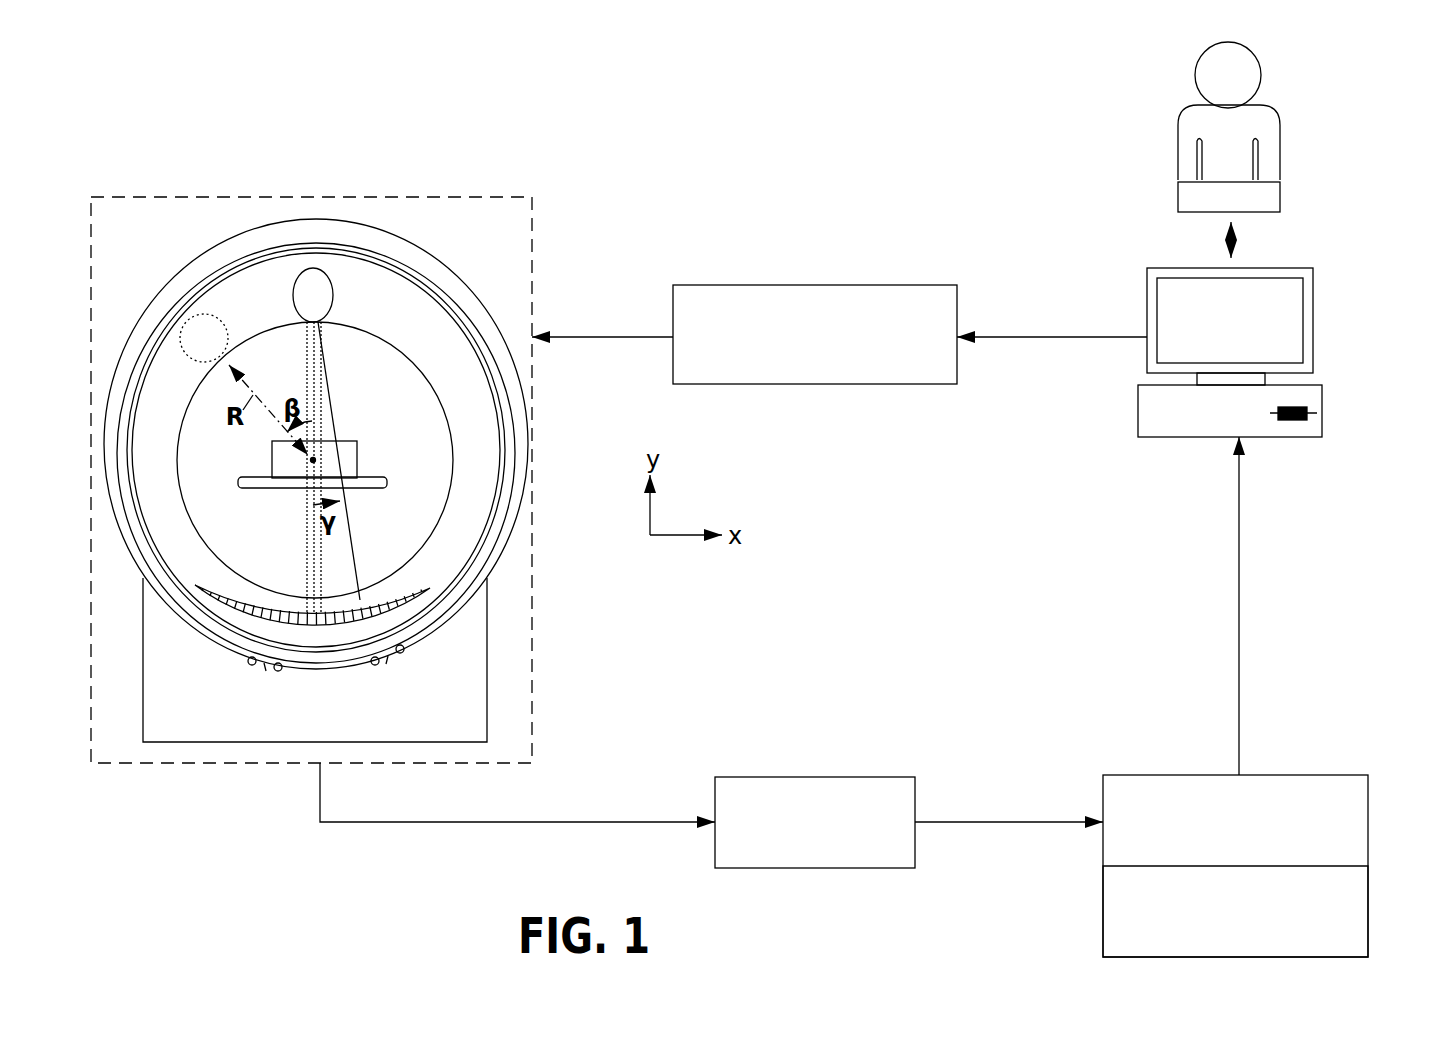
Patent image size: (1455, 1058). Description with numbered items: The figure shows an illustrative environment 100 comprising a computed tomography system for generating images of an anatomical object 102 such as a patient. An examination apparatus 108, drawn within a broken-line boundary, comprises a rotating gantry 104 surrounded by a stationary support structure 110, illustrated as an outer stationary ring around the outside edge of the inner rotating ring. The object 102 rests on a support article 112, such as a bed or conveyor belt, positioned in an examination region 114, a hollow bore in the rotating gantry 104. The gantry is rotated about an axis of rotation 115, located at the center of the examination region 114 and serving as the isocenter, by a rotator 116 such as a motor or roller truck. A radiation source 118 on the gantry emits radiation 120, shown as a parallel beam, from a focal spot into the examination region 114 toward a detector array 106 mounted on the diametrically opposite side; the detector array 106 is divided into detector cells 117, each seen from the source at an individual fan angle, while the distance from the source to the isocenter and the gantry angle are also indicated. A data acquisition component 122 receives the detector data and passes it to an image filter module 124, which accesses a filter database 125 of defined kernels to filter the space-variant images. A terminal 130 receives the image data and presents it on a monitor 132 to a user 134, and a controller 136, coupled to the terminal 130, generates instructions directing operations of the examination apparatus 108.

The environment 100 is at (185, 108).
The anatomical object 102 is at (332, 440).
The rotating gantry 104 is at (222, 268).
The detector array 106 is at (230, 613).
The examination apparatus 108 is at (533, 203).
The support structure 110 is at (426, 265).
The support article 112 is at (255, 477).
The examination region 114 is at (370, 530).
The axis of rotation 115 is at (315, 460).
The rotator 116 is at (404, 649).
The detector cells 117 is at (422, 587).
The radiation source 118 is at (332, 292).
The radiation 120 is at (307, 570).
The data acquisition component 122 is at (815, 868).
The image filter module 124 is at (1368, 775).
The filter database 125 is at (1370, 897).
The terminal 130 is at (1322, 385).
The monitor 132 is at (1313, 268).
The user 134 is at (1280, 120).
The controller 136 is at (817, 283).